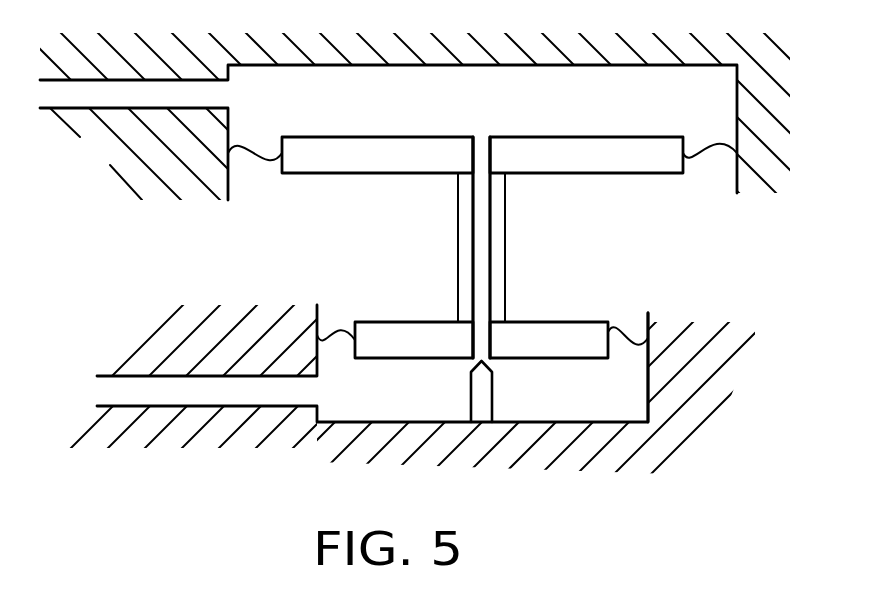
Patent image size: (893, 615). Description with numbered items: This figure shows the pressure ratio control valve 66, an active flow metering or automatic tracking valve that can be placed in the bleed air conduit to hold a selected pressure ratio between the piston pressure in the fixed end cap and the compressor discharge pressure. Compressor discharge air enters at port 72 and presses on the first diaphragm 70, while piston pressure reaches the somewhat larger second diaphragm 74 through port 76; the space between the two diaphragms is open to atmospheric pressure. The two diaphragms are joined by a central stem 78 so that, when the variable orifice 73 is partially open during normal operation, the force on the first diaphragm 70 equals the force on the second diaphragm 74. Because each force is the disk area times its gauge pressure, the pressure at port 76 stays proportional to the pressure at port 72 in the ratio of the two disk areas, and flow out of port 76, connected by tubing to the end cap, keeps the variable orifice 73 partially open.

The pressure ratio control valve 66 is at (672, 278).
The first diaphragm 70 is at (522, 358).
The port 72 is at (165, 407).
The variable orifice 73 is at (472, 365).
The second diaphragm 74 is at (550, 173).
The port 76 is at (150, 110).
The stem 78 is at (463, 235).